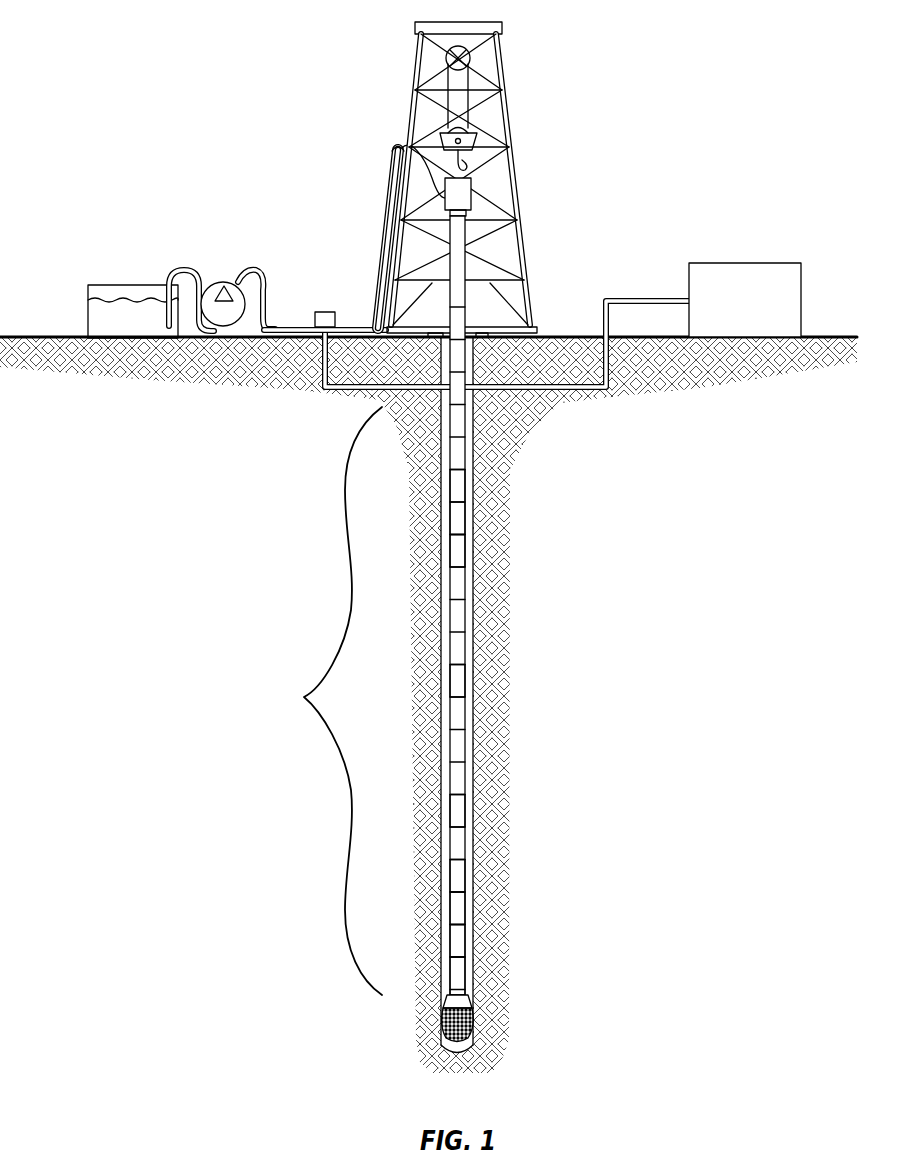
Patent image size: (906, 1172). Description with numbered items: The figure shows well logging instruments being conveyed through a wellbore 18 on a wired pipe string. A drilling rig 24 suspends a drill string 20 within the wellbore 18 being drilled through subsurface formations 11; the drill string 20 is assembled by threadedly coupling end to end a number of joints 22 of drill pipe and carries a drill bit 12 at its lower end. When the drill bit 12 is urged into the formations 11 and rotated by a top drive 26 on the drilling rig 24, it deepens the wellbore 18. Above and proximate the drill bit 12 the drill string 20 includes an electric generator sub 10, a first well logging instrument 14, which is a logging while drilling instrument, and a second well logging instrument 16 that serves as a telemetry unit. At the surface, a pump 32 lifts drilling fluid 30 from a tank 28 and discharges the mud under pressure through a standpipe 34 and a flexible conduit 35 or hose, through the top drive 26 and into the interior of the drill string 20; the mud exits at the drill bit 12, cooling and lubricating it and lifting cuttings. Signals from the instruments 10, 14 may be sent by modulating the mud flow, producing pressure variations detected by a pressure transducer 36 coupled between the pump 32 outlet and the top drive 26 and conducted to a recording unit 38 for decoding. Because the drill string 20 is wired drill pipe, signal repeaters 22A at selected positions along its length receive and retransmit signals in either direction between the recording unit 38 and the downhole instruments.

The electric generator sub 10 is at (467, 978).
The subsurface formations 11 is at (565, 412).
The drill bit 12 is at (467, 1028).
The first well logging instrument 14 is at (470, 945).
The second well logging instrument 16 is at (470, 912).
The wellbore 18 is at (472, 773).
The drill string 20 is at (304, 697).
The joints of drill pipe 22 is at (465, 455).
The signal repeater 22A is at (465, 521).
The drilling rig 24 is at (512, 120).
The top drive 26 is at (460, 200).
The tank 28 is at (108, 285).
The drilling fluid 30 is at (150, 331).
The pump 32 is at (220, 283).
The standpipe 34 is at (386, 207).
The flexible conduit 35 is at (401, 147).
The pressure transducer 36 is at (333, 301).
The recording unit 38 is at (746, 263).